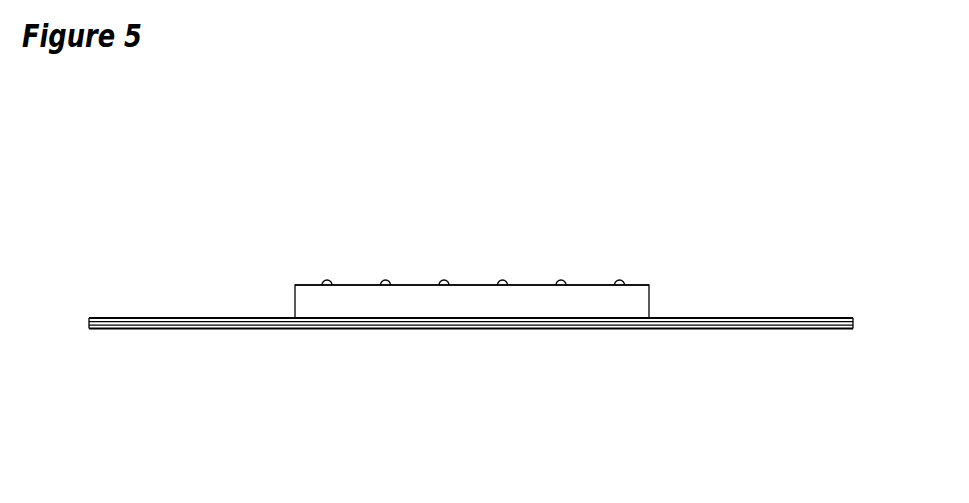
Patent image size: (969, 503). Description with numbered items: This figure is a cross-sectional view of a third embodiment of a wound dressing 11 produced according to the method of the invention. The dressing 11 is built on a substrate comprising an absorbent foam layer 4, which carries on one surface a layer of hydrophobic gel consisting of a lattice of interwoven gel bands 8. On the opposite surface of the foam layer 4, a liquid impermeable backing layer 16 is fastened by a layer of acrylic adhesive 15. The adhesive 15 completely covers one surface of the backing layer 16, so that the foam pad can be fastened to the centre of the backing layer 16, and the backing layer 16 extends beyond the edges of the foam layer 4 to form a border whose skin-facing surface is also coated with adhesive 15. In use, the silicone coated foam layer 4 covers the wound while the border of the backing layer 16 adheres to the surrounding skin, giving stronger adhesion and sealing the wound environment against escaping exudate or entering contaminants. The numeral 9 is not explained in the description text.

The absorbent foam layer 4 is at (313, 298).
The gel bands 8 is at (621, 281).
The top surface layer 9 is at (417, 285).
The wound dressing 11 is at (568, 235).
The acrylic adhesive 15 is at (720, 320).
The liquid impermeable backing layer 16 is at (497, 325).